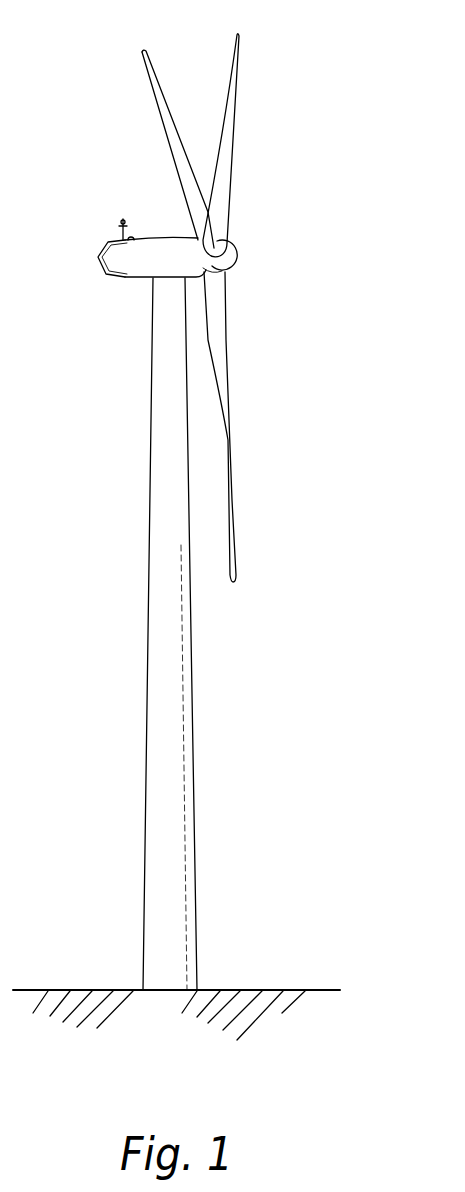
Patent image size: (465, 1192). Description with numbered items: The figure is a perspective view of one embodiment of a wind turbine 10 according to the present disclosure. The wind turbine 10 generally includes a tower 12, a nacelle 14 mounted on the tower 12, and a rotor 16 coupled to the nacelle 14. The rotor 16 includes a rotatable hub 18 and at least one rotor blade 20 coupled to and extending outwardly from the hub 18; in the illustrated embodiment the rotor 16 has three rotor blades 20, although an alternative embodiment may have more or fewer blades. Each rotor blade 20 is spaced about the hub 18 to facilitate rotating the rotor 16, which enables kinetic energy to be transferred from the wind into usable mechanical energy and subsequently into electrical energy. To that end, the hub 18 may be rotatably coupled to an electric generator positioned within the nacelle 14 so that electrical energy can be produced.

The wind turbine 10 is at (228, 502).
The tower 12 is at (157, 732).
The nacelle 14 is at (133, 281).
The rotor 16 is at (242, 233).
The rotatable hub 18 is at (235, 263).
The rotor blade 20 is at (231, 70).